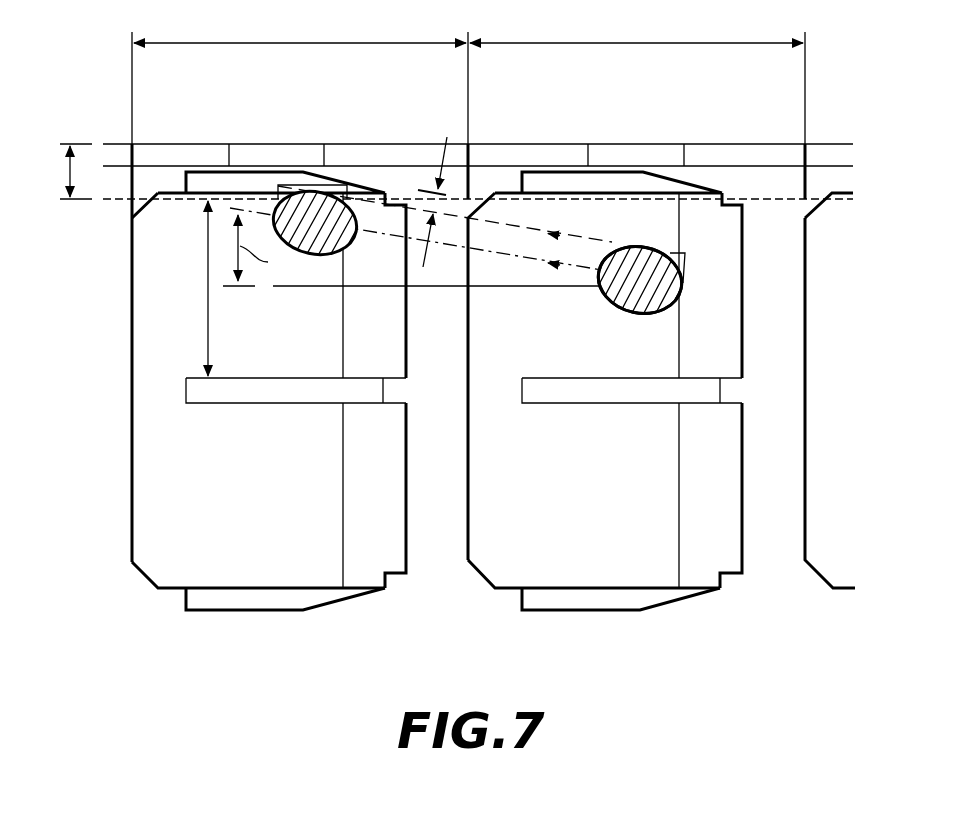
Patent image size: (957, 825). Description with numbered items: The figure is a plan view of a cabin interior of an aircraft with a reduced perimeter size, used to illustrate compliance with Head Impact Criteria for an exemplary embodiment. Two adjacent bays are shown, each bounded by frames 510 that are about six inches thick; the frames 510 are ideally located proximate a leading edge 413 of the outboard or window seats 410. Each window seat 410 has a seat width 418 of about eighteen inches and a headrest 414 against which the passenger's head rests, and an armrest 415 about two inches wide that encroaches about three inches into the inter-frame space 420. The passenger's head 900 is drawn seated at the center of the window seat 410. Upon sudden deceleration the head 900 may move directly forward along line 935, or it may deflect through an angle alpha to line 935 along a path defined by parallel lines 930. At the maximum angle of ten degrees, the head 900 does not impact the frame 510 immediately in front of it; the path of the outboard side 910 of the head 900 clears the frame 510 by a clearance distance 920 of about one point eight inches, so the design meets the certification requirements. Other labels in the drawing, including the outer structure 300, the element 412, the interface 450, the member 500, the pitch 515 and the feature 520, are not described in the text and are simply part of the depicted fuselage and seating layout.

The panel structure 300 is at (826, 143).
The window seat 410 is at (292, 351).
The end wall 412 is at (803, 548).
The leading edge 413 is at (128, 553).
The headrest 414 is at (390, 357).
The armrest 415 is at (207, 183).
The seat width 418 is at (208, 290).
The inter-frame space 420 is at (70, 168).
The interface line 450 is at (130, 203).
The face sheet 500 is at (121, 143).
The frame 510 is at (134, 155).
The cell pitch 515 is at (300, 42).
The perforation 520 is at (290, 142).
The head 900 is at (655, 300).
The outboard side 910 is at (649, 244).
The clearance distance 920 is at (432, 200).
The lines 930 is at (585, 265).
The line 935 is at (493, 287).